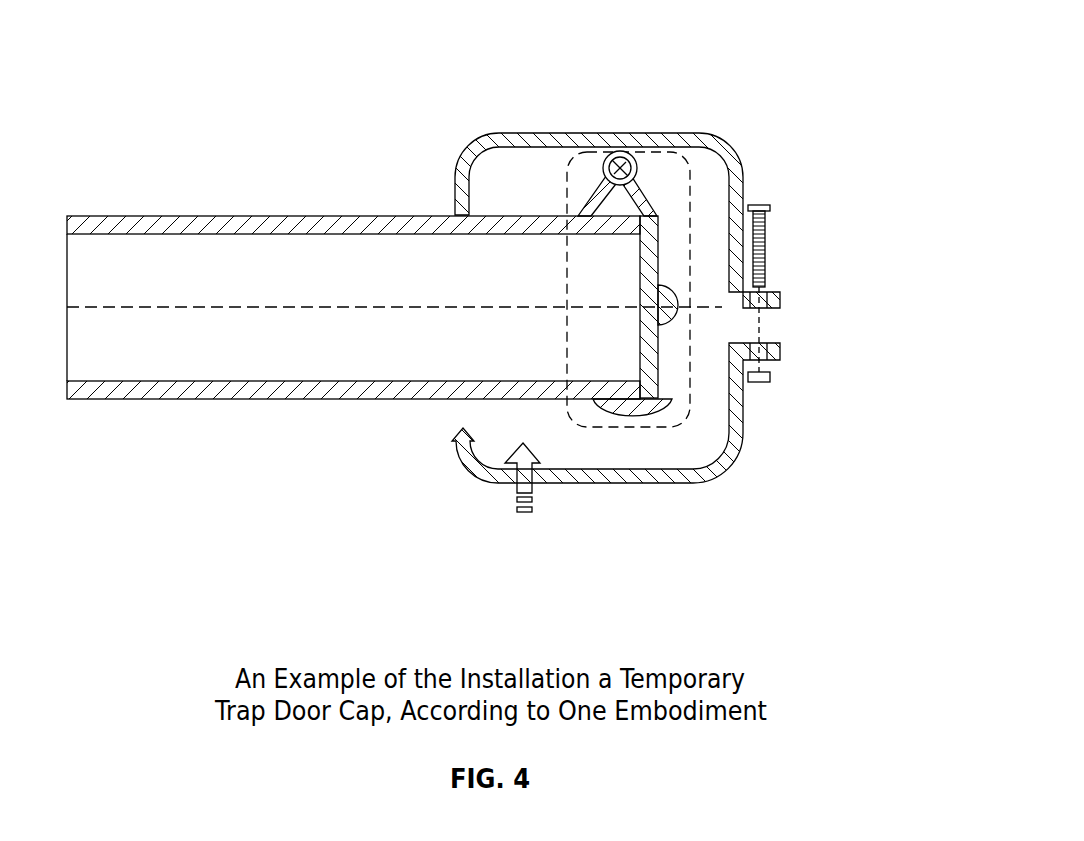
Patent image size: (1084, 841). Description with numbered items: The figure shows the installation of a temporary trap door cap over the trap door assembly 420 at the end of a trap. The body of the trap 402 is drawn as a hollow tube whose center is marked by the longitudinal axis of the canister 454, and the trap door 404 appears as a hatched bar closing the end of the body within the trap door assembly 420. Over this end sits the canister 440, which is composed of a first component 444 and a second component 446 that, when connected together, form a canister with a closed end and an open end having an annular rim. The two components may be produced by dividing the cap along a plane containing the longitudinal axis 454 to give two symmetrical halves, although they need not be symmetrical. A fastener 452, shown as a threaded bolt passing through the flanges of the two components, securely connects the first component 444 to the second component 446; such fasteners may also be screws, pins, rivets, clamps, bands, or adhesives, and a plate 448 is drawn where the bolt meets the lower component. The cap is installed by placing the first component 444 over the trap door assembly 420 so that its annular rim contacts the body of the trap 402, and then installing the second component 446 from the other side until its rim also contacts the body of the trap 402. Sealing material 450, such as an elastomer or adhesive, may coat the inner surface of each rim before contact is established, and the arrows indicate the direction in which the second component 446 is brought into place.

The first component 402 is at (217, 399).
The second component 404 is at (658, 242).
The Trap Door Assembly 420 is at (734, 369).
The Canister 440 is at (610, 307).
The First Component 444 is at (497, 122).
The Second Component 446 is at (740, 467).
The Plate 448 is at (742, 388).
The Sealing Material 450 is at (453, 215).
The Fastener 452 is at (767, 230).
The Longitudinal Axis of the Canister 454 is at (207, 307).